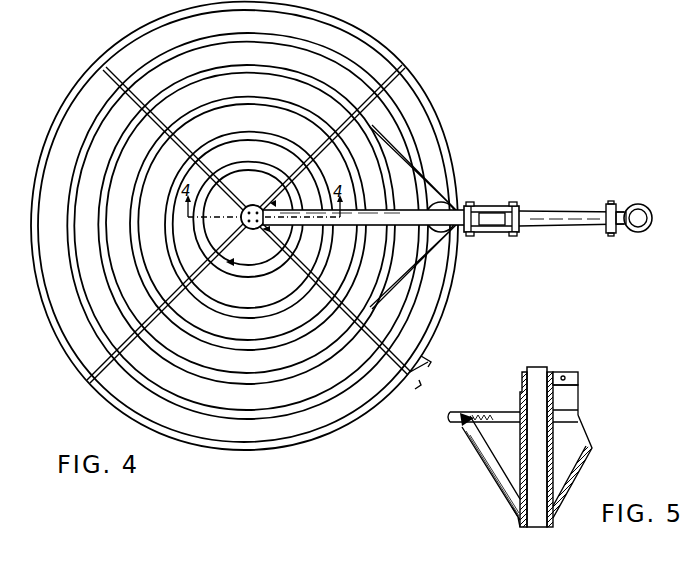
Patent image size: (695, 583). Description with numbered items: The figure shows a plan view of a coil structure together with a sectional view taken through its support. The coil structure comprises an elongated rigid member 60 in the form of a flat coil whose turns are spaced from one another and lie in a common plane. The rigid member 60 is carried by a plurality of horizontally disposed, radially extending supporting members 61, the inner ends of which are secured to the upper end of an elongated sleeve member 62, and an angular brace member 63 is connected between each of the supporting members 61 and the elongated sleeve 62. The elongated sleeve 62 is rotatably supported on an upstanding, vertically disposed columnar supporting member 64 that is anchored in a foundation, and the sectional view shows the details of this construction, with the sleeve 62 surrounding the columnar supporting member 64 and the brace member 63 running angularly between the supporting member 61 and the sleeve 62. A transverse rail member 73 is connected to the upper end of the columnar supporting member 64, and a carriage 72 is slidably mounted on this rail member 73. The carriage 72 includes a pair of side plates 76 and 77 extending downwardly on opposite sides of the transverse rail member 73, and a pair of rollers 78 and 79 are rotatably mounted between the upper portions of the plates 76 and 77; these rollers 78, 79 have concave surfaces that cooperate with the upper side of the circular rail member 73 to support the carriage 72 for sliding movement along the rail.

In FIG. 5, the elongated rigid member 60 is at (456, 412).
In FIG. 4, the radially extending supporting members 61 is at (103, 56).
In FIG. 5, the elongated sleeve member 62 is at (515, 504).
In FIG. 5, the angular brace member 63 is at (492, 473).
In FIG. 5, the columnar supporting member 64 is at (539, 519).
In FIG. 5, the carriage 72 is at (481, 576).
In FIG. 5, the transverse rail member 73 is at (564, 372).
In FIG. 4, the side plate 76 is at (497, 235).
In FIG. 4, the side plate 77 is at (500, 204).
In FIG. 4, the roller 78 is at (526, 211).
In FIG. 4, the roller 79 is at (489, 238).